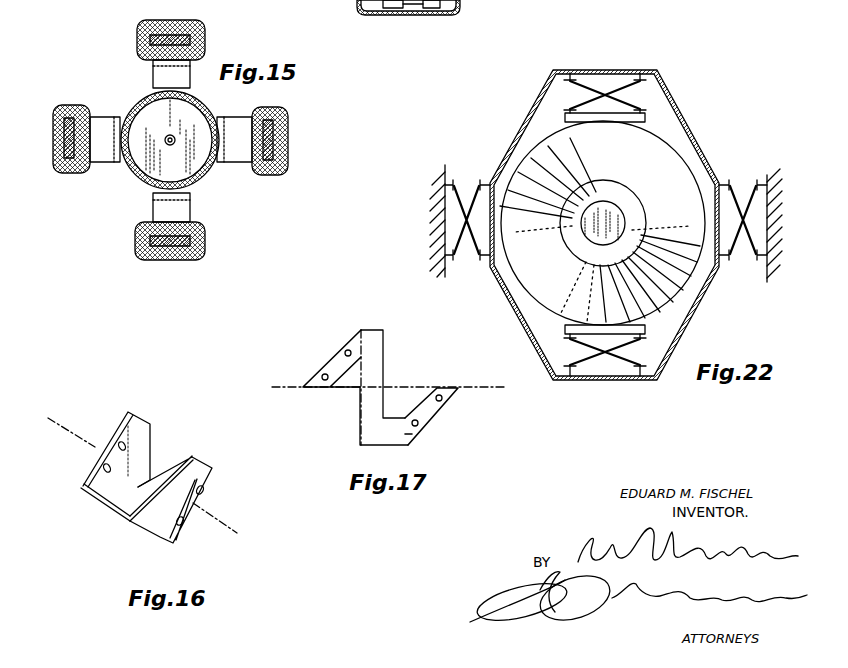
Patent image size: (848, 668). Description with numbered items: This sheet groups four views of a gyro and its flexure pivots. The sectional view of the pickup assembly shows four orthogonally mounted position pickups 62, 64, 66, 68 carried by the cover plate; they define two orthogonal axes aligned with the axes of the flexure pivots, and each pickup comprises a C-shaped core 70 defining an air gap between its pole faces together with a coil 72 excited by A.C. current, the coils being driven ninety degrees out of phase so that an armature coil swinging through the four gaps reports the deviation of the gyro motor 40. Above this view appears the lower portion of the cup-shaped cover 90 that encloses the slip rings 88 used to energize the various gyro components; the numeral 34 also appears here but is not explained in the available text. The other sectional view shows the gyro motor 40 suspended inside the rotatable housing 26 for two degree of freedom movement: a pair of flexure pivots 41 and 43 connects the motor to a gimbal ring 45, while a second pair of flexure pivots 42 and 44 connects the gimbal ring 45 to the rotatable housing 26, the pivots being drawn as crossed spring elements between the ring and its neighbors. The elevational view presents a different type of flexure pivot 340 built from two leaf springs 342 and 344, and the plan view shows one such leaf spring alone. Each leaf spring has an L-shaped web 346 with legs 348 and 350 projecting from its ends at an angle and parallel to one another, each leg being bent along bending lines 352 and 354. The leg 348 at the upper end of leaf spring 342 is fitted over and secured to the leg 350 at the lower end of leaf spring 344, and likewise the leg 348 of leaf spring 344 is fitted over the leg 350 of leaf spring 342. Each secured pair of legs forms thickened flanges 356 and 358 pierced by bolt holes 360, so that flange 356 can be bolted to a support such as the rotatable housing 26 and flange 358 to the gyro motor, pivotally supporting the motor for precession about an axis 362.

In FIG. 15, the position pickup 62 is at (70, 102).
In FIG. 15, the position pickup 64 is at (209, 34).
In FIG. 15, the position pickup 66 is at (293, 140).
In FIG. 15, the position pickup 68 is at (209, 248).
In FIG. 15, the C-shaped core 70 is at (240, 162).
In FIG. 15, the coil 72 is at (267, 172).
In FIG. 15, the slip rings 88 is at (380, 3).
In FIG. 15, the unit 34 is at (415, 2).
In FIG. 15, the cup-shaped cover 90 is at (358, 14).
In FIG. 22, the rotatable housing 26 is at (440, 221).
In FIG. 22, the gyro motor 40 is at (646, 167).
In FIG. 22, the flexure pivot 41 is at (570, 352).
In FIG. 22, the flexure pivot 42 is at (470, 260).
In FIG. 22, the flexure pivot 43 is at (642, 99).
In FIG. 22, the flexure pivot 44 is at (744, 260).
In FIG. 22, the gimbal ring 45 is at (708, 172).
In FIG. 16, the flexure pivot 340 is at (154, 472).
In FIG. 16, the leaf spring 342 is at (122, 500).
In FIG. 16, the leaf spring 344 is at (120, 503).
In FIG. 17, the L-shaped web 346 is at (381, 368).
In FIG. 16, the leg 348 is at (121, 462).
In FIG. 17, the leg 348 is at (322, 371).
In FIG. 16, the leg 350 is at (118, 416).
In FIG. 17, the leg 350 is at (453, 398).
In FIG. 17, the bending line 352 is at (356, 343).
In FIG. 17, the bending line 354 is at (418, 432).
In FIG. 16, the thickened flange 356 is at (107, 426).
In FIG. 16, the thickened flange 358 is at (195, 524).
In FIG. 16, the bolt holes 360 is at (103, 468).
In FIG. 16, the axis 362 is at (225, 525).
In FIG. 17, the axis 362 is at (287, 389).